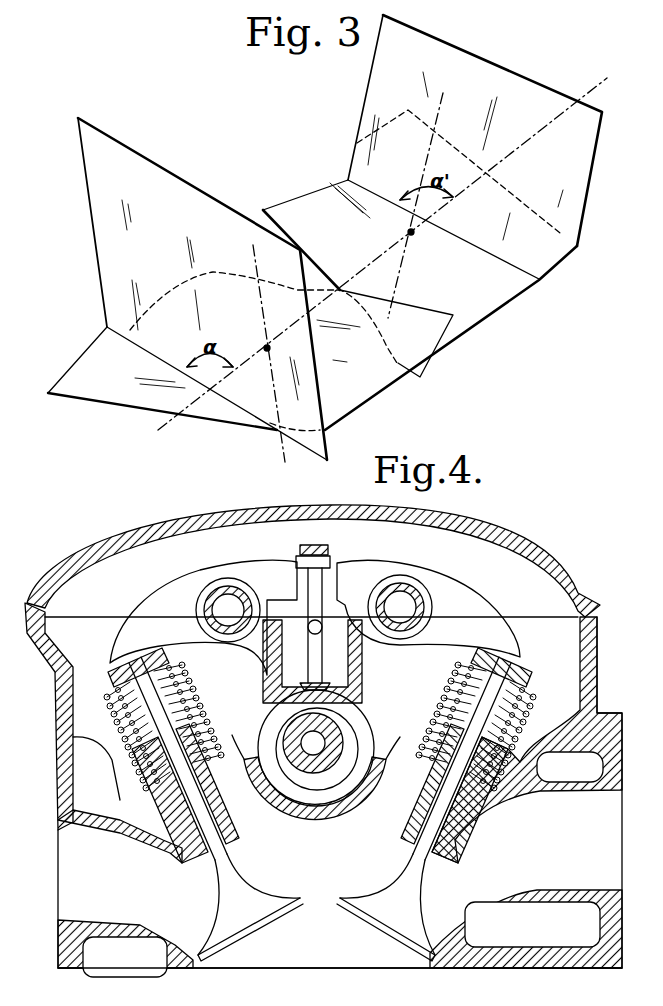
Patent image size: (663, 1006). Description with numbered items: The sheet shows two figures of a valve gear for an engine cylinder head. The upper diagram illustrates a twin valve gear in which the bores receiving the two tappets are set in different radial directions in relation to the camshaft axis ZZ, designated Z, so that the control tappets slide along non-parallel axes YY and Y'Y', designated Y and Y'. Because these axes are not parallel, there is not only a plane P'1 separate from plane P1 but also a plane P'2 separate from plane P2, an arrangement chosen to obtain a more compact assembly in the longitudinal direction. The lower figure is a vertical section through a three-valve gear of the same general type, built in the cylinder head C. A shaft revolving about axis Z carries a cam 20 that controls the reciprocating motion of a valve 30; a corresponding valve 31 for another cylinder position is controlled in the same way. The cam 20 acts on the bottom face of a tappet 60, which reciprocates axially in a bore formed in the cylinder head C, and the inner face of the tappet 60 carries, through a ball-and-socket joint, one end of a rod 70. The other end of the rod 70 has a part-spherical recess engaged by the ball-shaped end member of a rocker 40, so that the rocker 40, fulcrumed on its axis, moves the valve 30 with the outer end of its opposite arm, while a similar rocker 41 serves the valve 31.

In FIG. 3, the plane P1 is at (202, 289).
In FIG. 3, the plane P2 is at (250, 360).
In FIG. 3, the plane P'1 is at (475, 147).
In FIG. 3, the plane P'2 is at (420, 305).
In FIG. 3, the axis ZZ Z is at (382, 257).
In FIG. 3, the axis YY Y is at (275, 365).
In FIG. 3, the axis Y' Y' is at (428, 213).
In FIG. 4, the cylinder head C is at (67, 753).
In FIG. 4, the rocker 41 is at (168, 590).
In FIG. 4, the rocker 40 is at (456, 590).
In FIG. 4, the rod 70 is at (310, 660).
In FIG. 4, the tappet 60 is at (357, 668).
In FIG. 4, the cam 20 is at (338, 782).
In FIG. 4, the valve 31 is at (220, 880).
In FIG. 4, the valve 30 is at (407, 883).